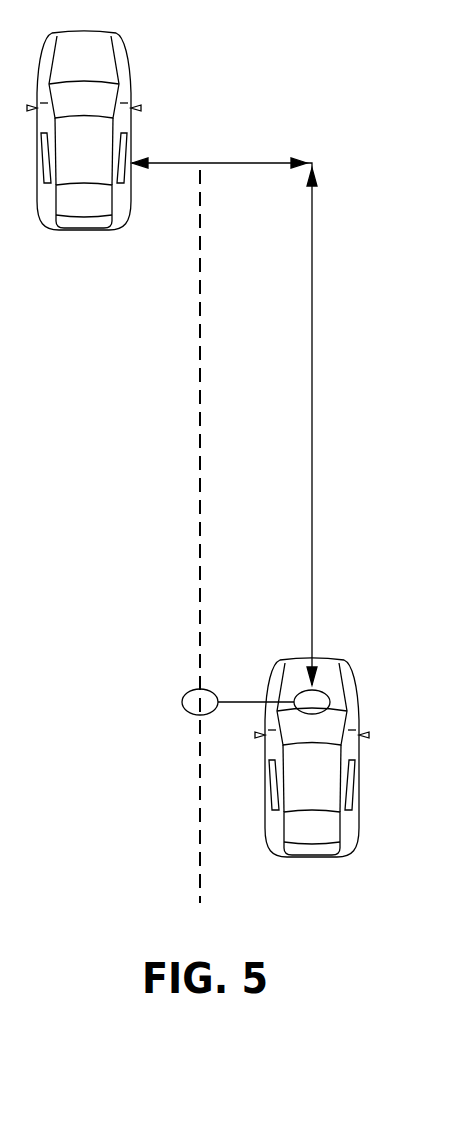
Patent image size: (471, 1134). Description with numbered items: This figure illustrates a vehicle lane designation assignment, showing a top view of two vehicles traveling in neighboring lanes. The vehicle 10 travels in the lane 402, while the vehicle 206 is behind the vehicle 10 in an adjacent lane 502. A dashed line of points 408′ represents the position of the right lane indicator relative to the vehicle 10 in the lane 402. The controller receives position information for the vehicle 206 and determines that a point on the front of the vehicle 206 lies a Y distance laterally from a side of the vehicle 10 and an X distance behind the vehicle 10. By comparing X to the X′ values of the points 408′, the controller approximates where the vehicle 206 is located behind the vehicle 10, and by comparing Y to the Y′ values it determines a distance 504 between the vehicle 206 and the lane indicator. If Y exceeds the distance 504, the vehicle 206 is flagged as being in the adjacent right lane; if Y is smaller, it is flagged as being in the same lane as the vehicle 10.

The vehicle 10 is at (90, 230).
The vehicle 206 is at (312, 857).
The lane 402 is at (152, 437).
The points 408′ is at (200, 633).
The adjacent lane 502 is at (268, 327).
The distance 504 is at (255, 698).